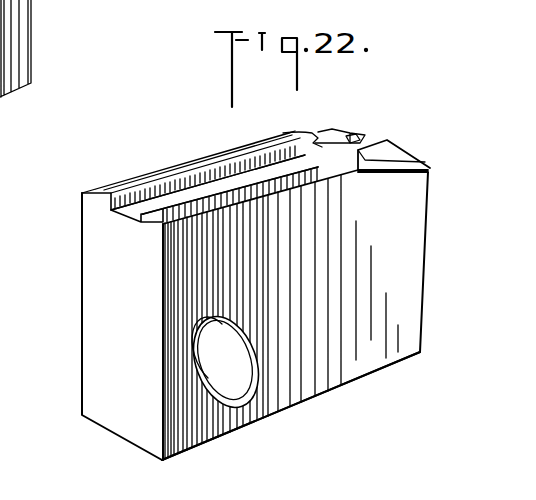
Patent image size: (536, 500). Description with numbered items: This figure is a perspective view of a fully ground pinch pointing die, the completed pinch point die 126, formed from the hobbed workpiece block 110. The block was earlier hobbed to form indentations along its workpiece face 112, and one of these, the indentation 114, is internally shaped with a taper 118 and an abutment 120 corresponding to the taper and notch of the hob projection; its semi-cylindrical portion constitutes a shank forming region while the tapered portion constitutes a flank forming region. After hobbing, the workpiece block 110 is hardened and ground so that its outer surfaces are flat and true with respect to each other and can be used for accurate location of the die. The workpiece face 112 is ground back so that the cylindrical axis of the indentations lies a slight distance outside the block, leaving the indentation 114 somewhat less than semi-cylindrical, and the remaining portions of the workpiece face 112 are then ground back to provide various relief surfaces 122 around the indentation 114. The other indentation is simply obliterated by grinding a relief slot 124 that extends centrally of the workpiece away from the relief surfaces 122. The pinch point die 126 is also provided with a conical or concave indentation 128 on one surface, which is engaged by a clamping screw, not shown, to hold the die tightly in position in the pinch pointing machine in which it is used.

The workpiece block 110 is at (74, 294).
The workpiece face 112 is at (247, 153).
The indentation 114 is at (372, 139).
The taper 118 is at (318, 143).
The abutment 120 is at (357, 134).
The relief surfaces 122 is at (333, 135).
The relief slot 124 is at (194, 184).
The pinch point die 126 is at (335, 388).
The conical or concave indentation 128 is at (232, 387).